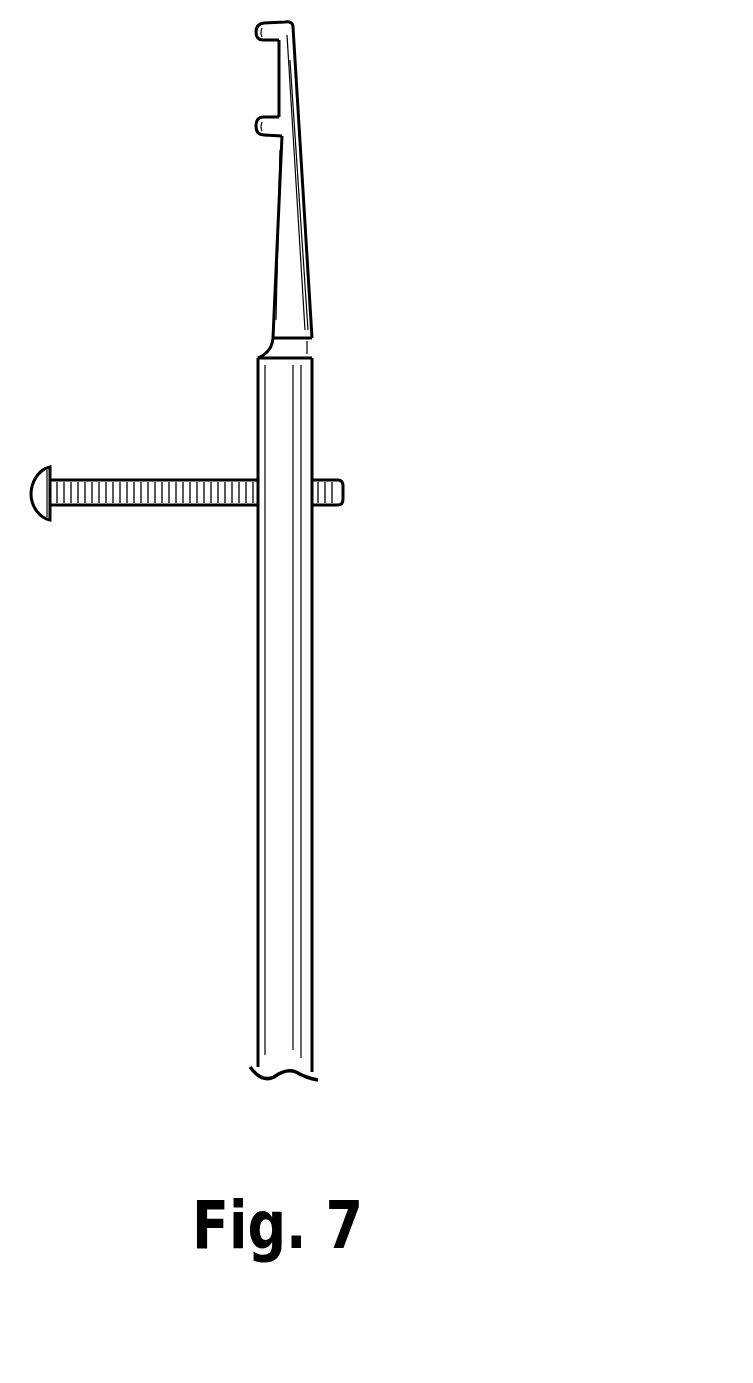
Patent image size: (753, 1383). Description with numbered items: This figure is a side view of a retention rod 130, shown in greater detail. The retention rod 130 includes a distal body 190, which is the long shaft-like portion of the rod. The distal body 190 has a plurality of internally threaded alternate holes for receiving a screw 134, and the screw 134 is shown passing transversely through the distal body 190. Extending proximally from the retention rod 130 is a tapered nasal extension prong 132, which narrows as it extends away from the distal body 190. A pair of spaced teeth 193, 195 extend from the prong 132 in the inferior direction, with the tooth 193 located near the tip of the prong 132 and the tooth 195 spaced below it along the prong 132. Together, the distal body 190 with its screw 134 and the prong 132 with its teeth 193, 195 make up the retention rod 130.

The retention rod 130 is at (354, 676).
The tapered nasal extension prong 132 is at (306, 202).
The screw 134 is at (135, 478).
The distal body 190 is at (312, 898).
The tooth 193 is at (255, 33).
The tooth 195 is at (255, 127).